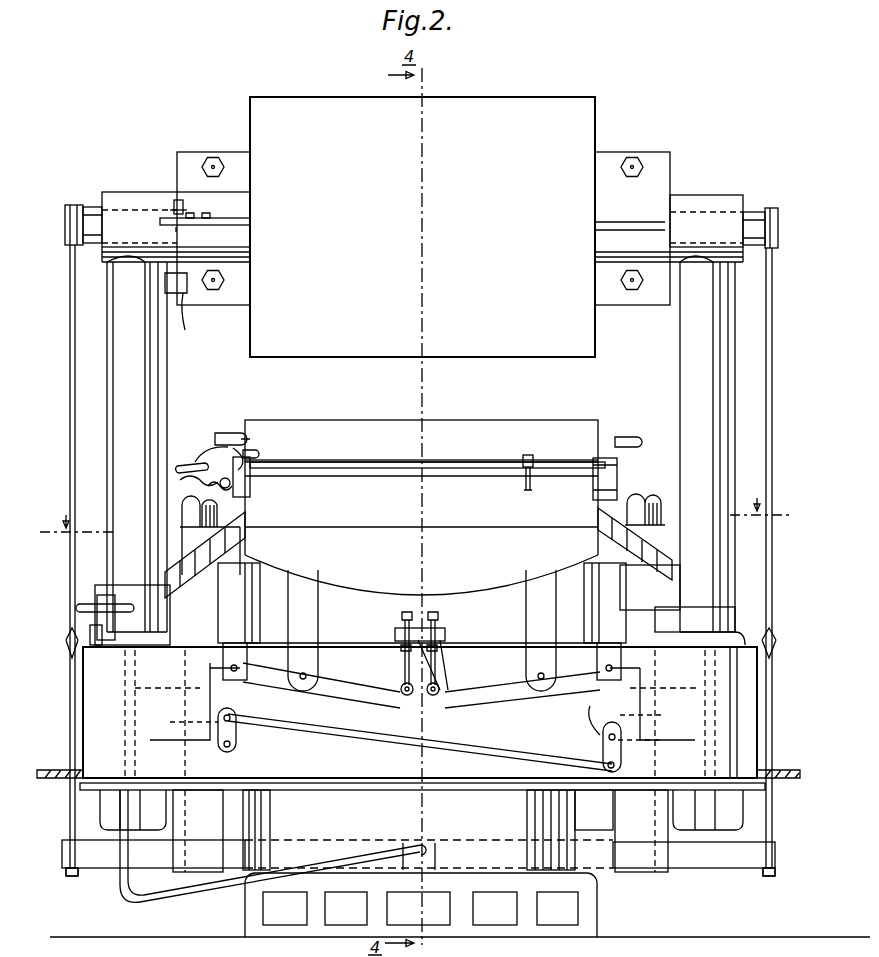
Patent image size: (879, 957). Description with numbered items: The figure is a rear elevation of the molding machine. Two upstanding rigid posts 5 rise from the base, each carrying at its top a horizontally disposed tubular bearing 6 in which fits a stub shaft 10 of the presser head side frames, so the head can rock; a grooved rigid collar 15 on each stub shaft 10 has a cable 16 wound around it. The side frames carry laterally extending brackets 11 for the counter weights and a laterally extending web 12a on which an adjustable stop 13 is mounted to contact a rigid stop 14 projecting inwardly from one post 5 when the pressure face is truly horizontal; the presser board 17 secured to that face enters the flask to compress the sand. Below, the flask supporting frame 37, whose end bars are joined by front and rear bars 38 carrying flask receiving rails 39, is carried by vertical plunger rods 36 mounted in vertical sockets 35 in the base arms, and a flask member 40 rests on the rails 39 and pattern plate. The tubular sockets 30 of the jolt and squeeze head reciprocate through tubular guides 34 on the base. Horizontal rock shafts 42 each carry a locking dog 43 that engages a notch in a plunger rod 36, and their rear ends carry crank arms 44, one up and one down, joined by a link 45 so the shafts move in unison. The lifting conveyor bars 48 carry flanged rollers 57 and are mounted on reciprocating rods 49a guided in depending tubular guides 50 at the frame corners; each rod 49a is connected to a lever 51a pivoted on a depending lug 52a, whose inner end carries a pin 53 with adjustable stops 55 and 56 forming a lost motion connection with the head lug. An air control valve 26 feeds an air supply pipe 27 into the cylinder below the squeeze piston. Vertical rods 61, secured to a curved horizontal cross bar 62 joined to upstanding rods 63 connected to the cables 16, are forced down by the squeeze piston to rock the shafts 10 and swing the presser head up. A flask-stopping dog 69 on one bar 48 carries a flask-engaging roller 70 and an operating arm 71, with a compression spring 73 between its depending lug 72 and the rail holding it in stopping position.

The rigid post 5 is at (165, 363).
The tubular bearing 6 is at (118, 196).
The stub shaft 10 is at (90, 210).
The bracket 11 is at (200, 160).
The laterally extending web 12a is at (228, 222).
The adjustable stop 13 is at (176, 198).
The rigid stop 14 is at (186, 330).
The grooved rigid collar 15 is at (66, 222).
The cable 16 is at (70, 322).
The presser board 17 is at (514, 108).
The air control valve 26 is at (97, 598).
The air supply pipe 27 is at (200, 905).
The tubular socket 30 is at (584, 612).
The tubular guide 34 is at (210, 700).
The vertical socket 35 is at (665, 625).
The plunger rod 36 is at (190, 628).
The flask supporting frame 37 is at (250, 545).
The front and rear bar 38 is at (435, 492).
The flask receiving rail 39 is at (362, 478).
The flask member 40 is at (395, 425).
The rock shaft 42 is at (236, 748).
The locking dog 43 is at (170, 722).
The crank arm 44 is at (240, 712).
The link 45 is at (424, 742).
The lifting conveyor bar 48 is at (250, 455).
The rear reciprocating rod 49a is at (255, 520).
The depending tubular guide 50 is at (238, 600).
The lever 51a is at (350, 685).
The depending lug 52a is at (318, 655).
The pin 53 is at (400, 672).
The adjustable stop 55 is at (433, 612).
The adjustable stop 56 is at (445, 660).
The flanged roller 57 is at (250, 480).
The vertical rod 61 is at (255, 845).
The horizontal cross bar 62 is at (92, 866).
The upstanding rod 63 is at (770, 840).
The dog 69 is at (225, 448).
The flask-engaging roller 70 is at (245, 450).
The operating arm 71 is at (178, 469).
The depending lug 72 is at (180, 484).
The compression spring 73 is at (210, 488).